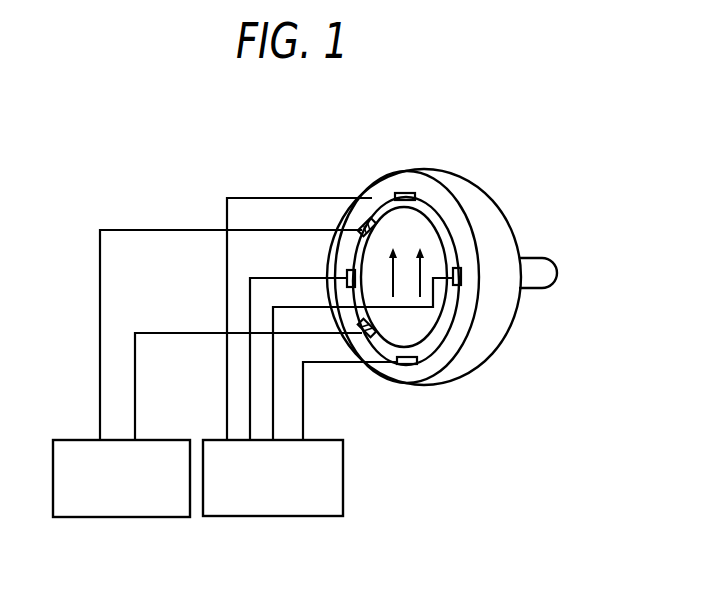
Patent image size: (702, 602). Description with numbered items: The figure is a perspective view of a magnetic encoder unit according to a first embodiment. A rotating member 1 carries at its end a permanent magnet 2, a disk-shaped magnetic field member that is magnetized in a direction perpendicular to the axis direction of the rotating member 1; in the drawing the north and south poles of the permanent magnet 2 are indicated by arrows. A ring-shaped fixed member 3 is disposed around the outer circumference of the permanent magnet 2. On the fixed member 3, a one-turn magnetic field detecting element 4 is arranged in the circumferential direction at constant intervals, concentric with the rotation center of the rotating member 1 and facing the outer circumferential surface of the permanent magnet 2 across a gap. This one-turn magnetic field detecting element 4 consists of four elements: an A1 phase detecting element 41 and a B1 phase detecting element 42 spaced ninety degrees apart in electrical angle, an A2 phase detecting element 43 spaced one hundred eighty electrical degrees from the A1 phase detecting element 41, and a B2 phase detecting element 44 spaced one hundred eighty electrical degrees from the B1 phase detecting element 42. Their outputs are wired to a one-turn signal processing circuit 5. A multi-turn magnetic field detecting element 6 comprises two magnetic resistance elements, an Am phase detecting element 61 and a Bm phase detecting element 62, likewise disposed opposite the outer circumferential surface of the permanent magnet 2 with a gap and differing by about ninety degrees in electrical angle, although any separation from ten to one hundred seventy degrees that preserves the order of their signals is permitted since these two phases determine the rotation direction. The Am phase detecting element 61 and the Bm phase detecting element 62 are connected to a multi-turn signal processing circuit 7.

The rotating member 1 is at (537, 272).
The permanent magnet 2 is at (421, 315).
The fixed member 3 is at (497, 257).
The one-turn magnetic field detecting element 4 is at (403, 170).
The A1 phase detecting element 41 is at (405, 196).
The B1 phase detecting element 42 is at (463, 276).
The A2 phase detecting element 43 is at (405, 365).
The B2 phase detecting element 44 is at (347, 281).
The one-turn signal processing circuit 5 is at (220, 450).
The multi-turn magnetic field detecting element 6 is at (360, 200).
The Am phase detecting element 61 is at (360, 221).
The Bm phase detecting element 62 is at (362, 334).
The multi-turn signal processing circuit 7 is at (65, 450).